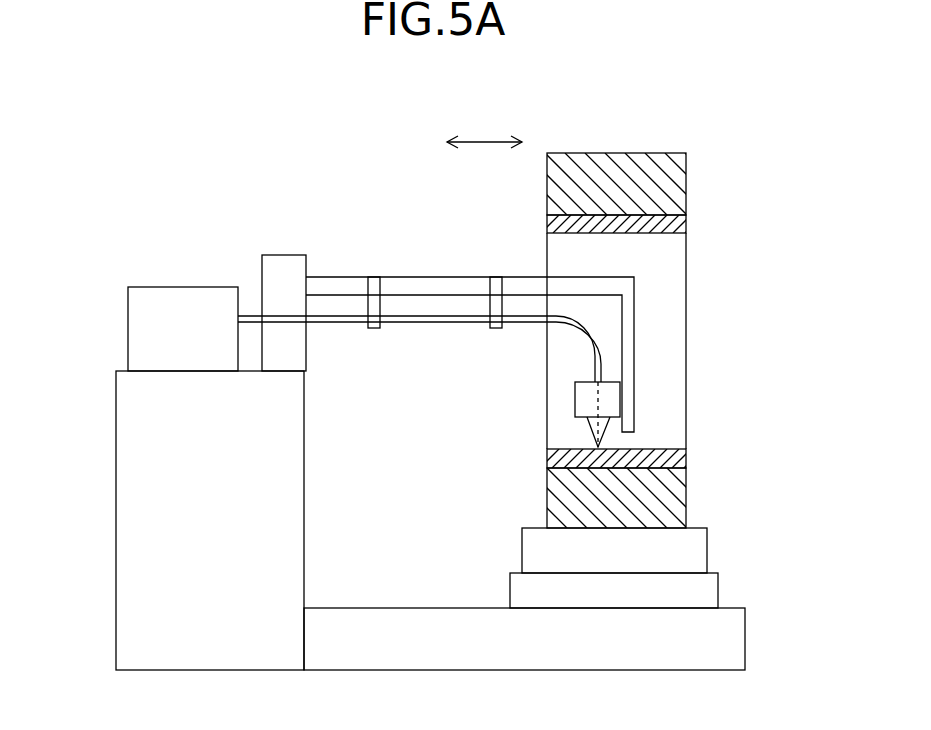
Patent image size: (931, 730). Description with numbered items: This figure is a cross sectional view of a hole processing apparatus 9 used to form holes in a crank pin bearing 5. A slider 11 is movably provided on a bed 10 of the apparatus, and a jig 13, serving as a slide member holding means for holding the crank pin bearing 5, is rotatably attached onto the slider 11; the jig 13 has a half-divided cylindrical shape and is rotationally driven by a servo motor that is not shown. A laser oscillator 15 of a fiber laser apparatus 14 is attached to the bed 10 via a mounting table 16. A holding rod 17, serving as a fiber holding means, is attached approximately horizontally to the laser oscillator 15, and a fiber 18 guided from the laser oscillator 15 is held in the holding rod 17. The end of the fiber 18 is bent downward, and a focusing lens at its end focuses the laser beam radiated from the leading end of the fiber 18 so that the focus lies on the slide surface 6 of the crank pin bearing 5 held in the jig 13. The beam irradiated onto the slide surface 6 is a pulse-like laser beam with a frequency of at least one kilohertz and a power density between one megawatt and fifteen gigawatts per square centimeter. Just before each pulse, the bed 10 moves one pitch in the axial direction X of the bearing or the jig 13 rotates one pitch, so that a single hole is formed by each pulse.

The hole processing apparatus 9 is at (432, 184).
The crank pin bearing 5 is at (688, 227).
The slide surface 6 is at (650, 449).
The bed 10 is at (412, 607).
The slider 11 is at (718, 594).
The jig 13 is at (688, 190).
The fiber laser apparatus 14 is at (233, 287).
The laser oscillator 15 is at (165, 287).
The mounting table 16 is at (113, 417).
The holding rod 17 is at (435, 276).
The fiber 18 is at (437, 324).